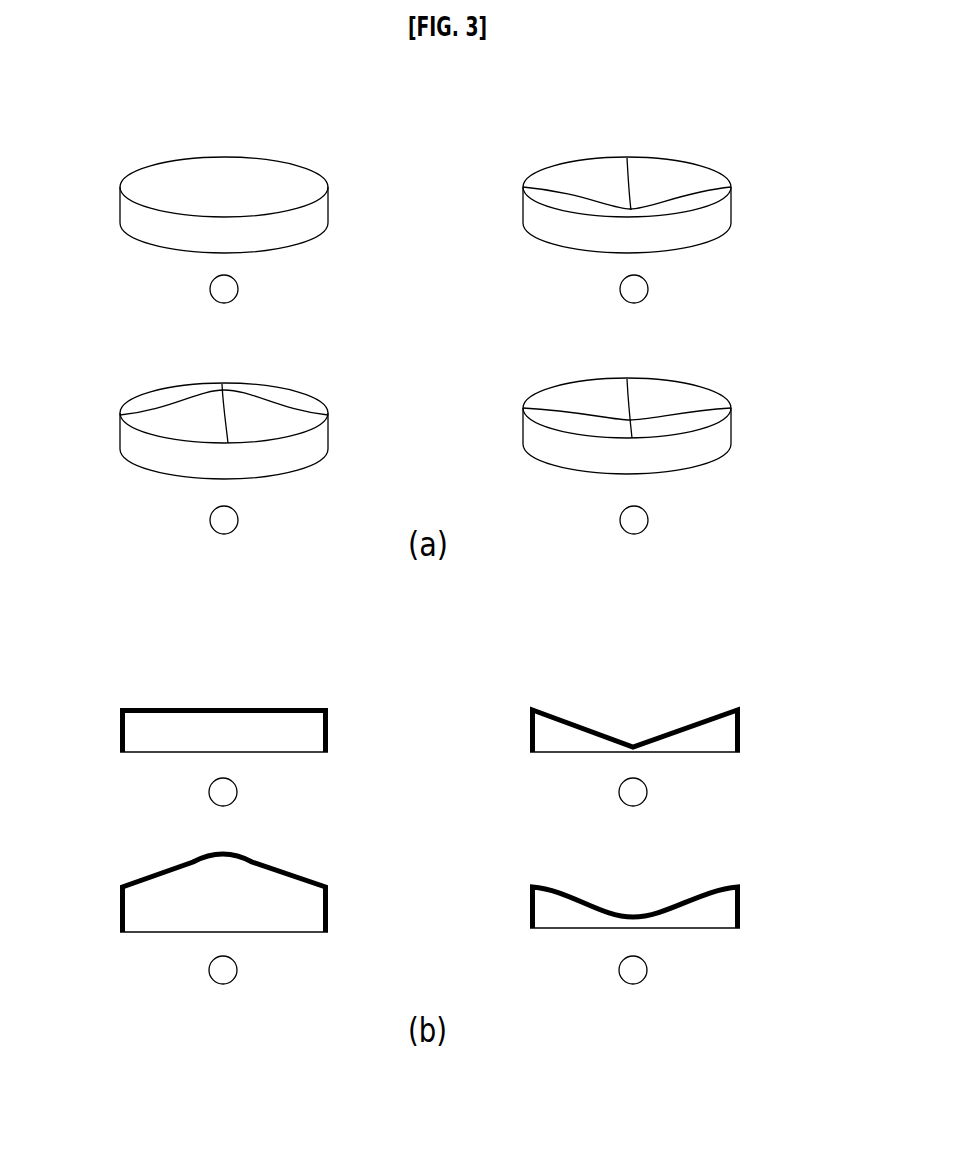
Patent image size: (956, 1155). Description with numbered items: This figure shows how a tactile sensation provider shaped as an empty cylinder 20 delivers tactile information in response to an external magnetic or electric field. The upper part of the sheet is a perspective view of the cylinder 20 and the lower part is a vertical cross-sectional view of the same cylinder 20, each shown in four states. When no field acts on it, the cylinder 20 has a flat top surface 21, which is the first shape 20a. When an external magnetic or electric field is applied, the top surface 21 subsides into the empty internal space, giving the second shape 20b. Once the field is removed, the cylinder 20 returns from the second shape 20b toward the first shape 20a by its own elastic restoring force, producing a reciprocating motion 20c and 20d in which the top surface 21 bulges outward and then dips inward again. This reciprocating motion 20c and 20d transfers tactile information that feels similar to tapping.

The empty cylinder 20 is at (450, 530).
The top surface 21 is at (257, 175).
The first shape 20a is at (127, 106).
The second shape 20b is at (539, 106).
The reciprocating motion 20c is at (129, 345).
The reciprocating motion 20d is at (539, 345).